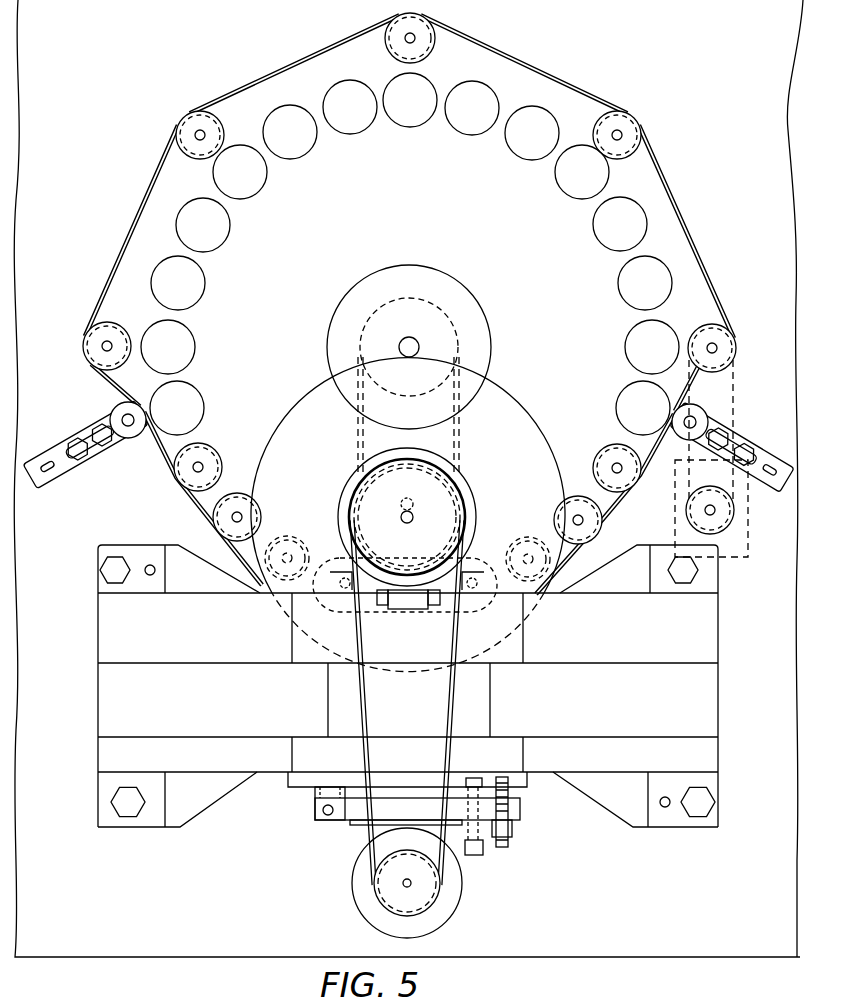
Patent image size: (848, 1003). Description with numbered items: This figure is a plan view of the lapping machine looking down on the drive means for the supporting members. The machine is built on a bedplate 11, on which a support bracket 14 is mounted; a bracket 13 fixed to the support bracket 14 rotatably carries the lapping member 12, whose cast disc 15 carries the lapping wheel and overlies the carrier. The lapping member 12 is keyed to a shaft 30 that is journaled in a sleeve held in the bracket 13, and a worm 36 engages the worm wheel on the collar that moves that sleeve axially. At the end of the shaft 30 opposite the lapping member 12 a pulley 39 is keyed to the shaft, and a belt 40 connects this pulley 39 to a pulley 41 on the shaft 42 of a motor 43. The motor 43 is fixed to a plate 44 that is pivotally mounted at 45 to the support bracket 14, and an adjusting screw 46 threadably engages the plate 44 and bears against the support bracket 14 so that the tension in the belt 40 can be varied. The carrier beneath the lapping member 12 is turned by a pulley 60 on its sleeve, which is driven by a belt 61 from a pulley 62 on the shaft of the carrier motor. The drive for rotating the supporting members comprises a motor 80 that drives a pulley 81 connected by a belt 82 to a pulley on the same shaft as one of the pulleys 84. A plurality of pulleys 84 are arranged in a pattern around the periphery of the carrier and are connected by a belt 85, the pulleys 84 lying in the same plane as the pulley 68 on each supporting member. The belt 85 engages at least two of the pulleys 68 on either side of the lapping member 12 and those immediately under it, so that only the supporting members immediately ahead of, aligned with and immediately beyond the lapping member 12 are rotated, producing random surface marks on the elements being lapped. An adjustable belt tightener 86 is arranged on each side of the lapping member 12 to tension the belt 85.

The bedplate 11 is at (164, 891).
The lapping member 12 is at (408, 515).
The bracket 13 is at (350, 515).
The support bracket 14 is at (708, 693).
The cast disc 15 is at (312, 398).
The shaft 30 is at (414, 515).
The worm 36 is at (405, 610).
The pulley 39 is at (460, 458).
The belt 40 is at (446, 707).
The pulley 41 is at (437, 900).
The shaft 42 is at (403, 883).
The motor 43 is at (360, 912).
The plate 44 is at (520, 812).
The pivot 45 is at (328, 815).
The adjusting screw 46 is at (477, 850).
The pulley 60 is at (447, 313).
The belt 61 is at (460, 431).
The pulley 62 is at (458, 527).
The pulley 68 is at (203, 275).
The motor 80 is at (728, 552).
The pulley 81 is at (733, 518).
The belt 82 is at (738, 372).
The pulleys 84 is at (415, 30).
The belt 85 is at (662, 177).
The adjustable belt tightener 86 is at (130, 433).